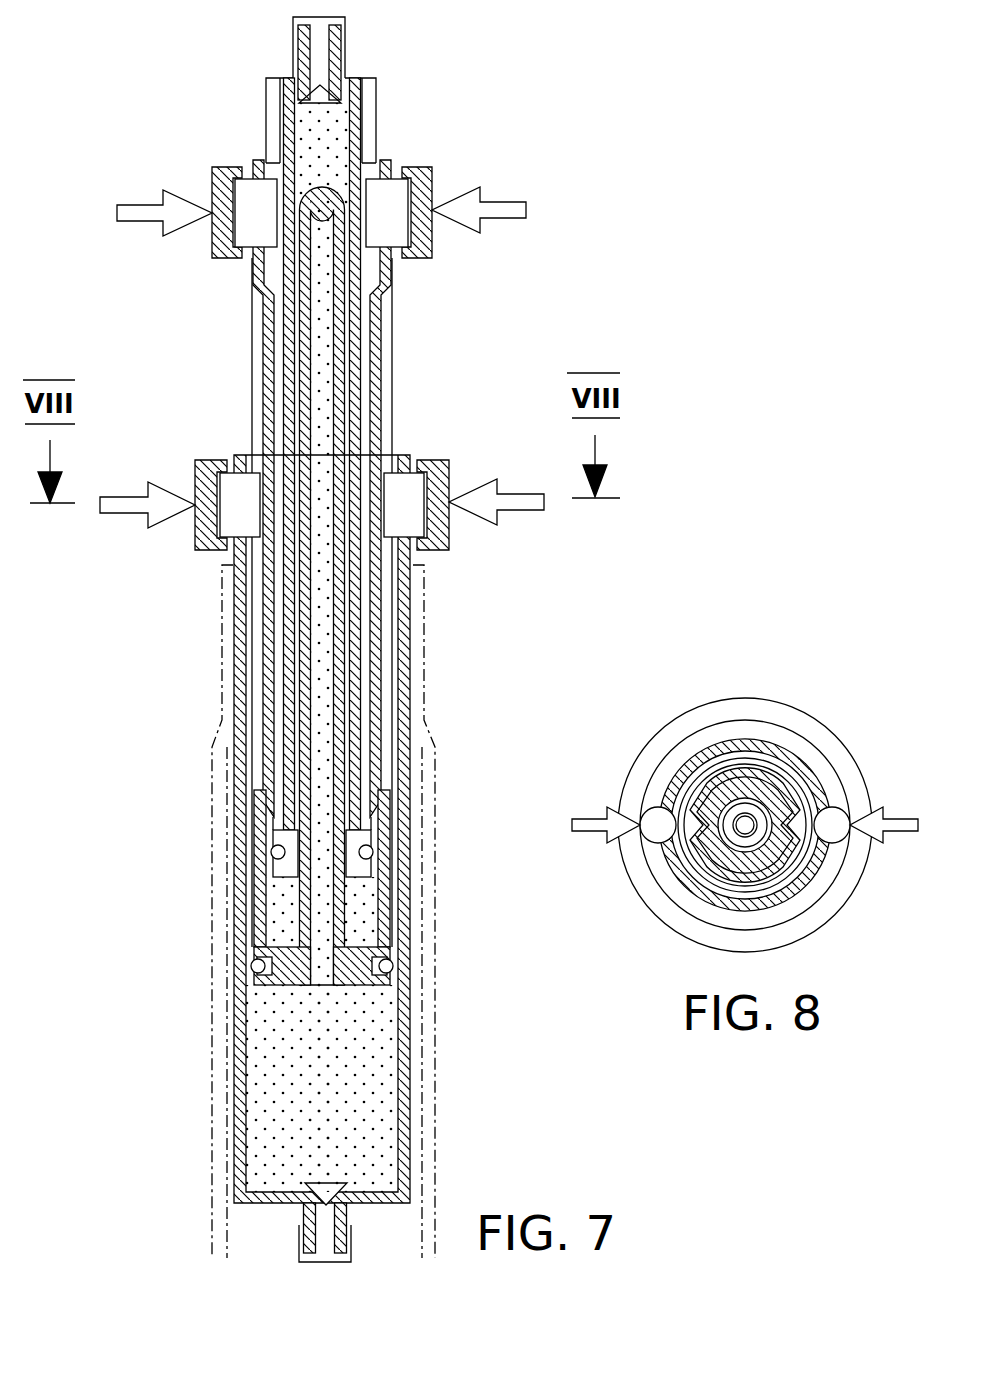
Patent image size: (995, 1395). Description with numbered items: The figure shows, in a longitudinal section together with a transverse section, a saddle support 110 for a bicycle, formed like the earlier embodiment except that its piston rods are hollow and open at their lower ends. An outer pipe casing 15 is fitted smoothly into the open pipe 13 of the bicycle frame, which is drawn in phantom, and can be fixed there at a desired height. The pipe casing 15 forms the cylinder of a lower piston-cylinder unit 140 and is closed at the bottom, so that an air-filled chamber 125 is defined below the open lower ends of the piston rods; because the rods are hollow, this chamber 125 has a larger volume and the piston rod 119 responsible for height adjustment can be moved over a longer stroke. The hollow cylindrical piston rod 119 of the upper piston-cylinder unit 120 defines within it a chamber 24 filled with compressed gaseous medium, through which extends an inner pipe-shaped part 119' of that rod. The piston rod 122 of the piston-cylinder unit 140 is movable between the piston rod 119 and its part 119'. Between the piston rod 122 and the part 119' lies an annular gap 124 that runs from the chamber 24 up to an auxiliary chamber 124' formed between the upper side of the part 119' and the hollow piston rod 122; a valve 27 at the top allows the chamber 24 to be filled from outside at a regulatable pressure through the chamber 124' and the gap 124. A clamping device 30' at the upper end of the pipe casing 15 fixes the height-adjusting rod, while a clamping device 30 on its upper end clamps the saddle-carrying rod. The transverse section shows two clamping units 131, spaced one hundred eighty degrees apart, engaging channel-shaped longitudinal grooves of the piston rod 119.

In FIG. 7, the open pipe 13 is at (220, 1143).
In FIG. 7, the outer pipe casing 15 is at (412, 1078).
In FIG. 8, the outer pipe casing 15 is at (790, 752).
In FIG. 7, the chamber 24 is at (378, 912).
In FIG. 7, the valve 27 is at (330, 62).
In FIG. 7, the clamping device 30 is at (321, 235).
In FIG. 7, the clamping device 30' is at (322, 480).
In FIG. 7, the saddle support 110 is at (500, 334).
In FIG. 7, the piston rod 119 is at (250, 494).
In FIG. 8, the piston rod 119 is at (711, 786).
In FIG. 7, the inner pipe-shaped part 119' is at (248, 689).
In FIG. 8, the inner pipe-shaped part 119' is at (818, 777).
In FIG. 7, the piston-cylinder unit 120 is at (232, 932).
In FIG. 7, the piston rod 122 is at (361, 672).
In FIG. 8, the piston rod 122 is at (742, 787).
In FIG. 7, the annular gap 124 is at (209, 859).
In FIG. 8, the annular gap 124 is at (777, 871).
In FIG. 7, the auxiliary chamber 124' is at (259, 149).
In FIG. 7, the chamber 125 is at (368, 1160).
In FIG. 8, the clamping units 131 is at (835, 832).
In FIG. 7, the piston-cylinder unit 140 is at (212, 1024).